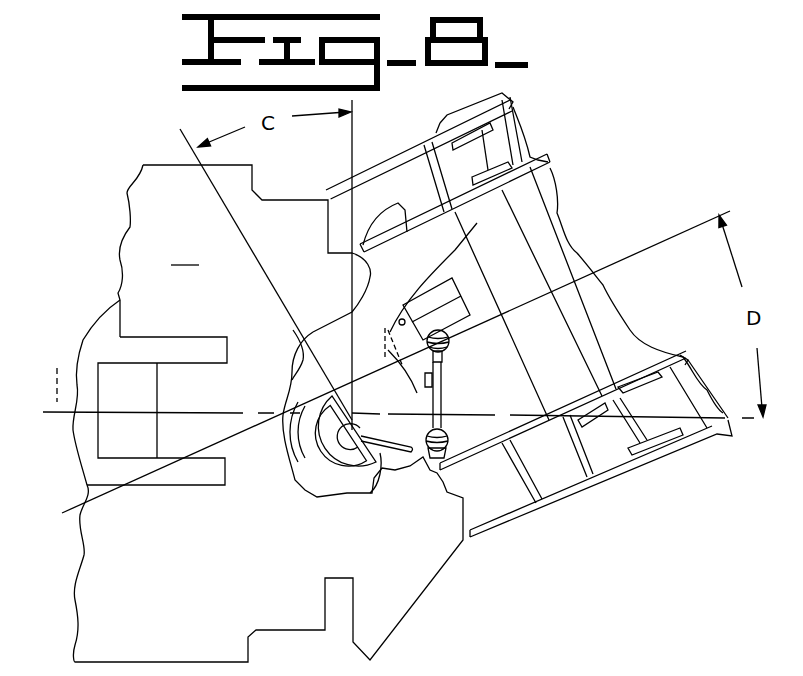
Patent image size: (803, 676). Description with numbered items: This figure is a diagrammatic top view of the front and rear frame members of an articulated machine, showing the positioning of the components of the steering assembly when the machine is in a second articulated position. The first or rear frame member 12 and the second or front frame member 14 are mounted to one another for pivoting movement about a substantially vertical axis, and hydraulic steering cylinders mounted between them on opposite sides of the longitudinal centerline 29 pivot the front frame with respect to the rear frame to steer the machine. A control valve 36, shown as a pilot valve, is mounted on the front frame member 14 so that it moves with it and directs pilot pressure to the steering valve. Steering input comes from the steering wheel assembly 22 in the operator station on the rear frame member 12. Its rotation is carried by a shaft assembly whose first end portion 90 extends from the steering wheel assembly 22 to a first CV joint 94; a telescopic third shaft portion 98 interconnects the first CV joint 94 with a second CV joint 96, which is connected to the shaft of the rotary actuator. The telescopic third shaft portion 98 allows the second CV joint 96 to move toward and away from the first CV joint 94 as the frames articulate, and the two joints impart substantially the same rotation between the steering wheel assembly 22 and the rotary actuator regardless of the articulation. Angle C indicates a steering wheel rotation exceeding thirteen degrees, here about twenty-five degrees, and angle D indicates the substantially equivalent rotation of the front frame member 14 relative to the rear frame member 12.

The first frame member 12 is at (268, 413).
The second frame member 14 is at (635, 341).
The steering wheel assembly 22 is at (317, 490).
The longitudinal centerline 29 is at (57, 366).
The control valve 36 is at (460, 303).
The first end portion 90 is at (395, 463).
The first CV joint 94 is at (448, 446).
The second CV joint 96 is at (455, 341).
The third shaft portion 98 is at (441, 397).